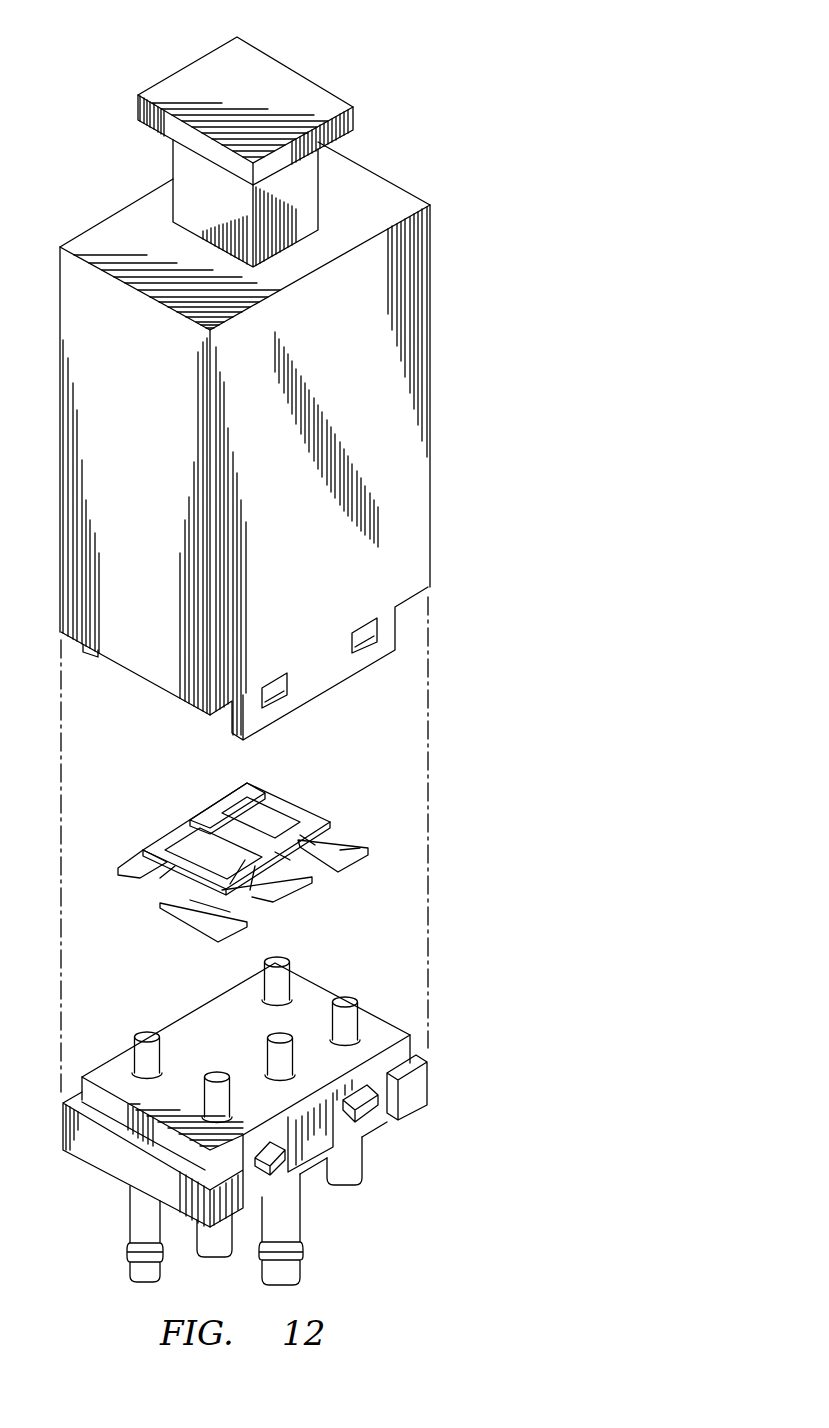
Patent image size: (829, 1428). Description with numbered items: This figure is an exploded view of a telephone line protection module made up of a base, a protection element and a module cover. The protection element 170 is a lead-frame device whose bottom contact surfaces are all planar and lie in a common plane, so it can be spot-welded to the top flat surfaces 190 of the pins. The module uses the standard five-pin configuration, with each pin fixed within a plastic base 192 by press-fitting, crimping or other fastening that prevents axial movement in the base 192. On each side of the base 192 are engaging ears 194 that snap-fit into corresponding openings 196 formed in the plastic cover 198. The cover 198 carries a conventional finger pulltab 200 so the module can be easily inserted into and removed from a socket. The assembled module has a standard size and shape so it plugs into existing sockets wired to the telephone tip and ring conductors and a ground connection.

The protection element 170 is at (330, 795).
The top flat surfaces 190 is at (344, 1000).
The base 192 is at (380, 1030).
The engaging ears 194 is at (370, 1110).
The openings 196 is at (360, 642).
The cover 198 is at (420, 277).
The finger pulltab 200 is at (282, 72).